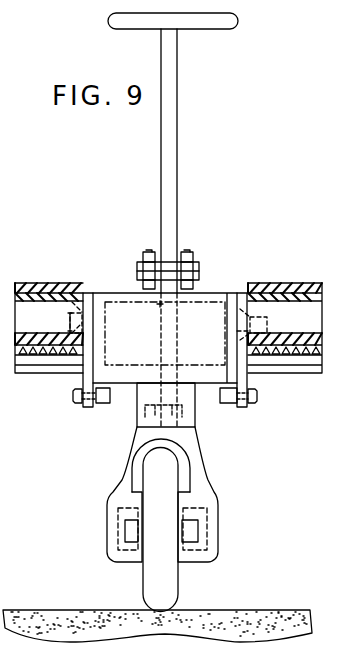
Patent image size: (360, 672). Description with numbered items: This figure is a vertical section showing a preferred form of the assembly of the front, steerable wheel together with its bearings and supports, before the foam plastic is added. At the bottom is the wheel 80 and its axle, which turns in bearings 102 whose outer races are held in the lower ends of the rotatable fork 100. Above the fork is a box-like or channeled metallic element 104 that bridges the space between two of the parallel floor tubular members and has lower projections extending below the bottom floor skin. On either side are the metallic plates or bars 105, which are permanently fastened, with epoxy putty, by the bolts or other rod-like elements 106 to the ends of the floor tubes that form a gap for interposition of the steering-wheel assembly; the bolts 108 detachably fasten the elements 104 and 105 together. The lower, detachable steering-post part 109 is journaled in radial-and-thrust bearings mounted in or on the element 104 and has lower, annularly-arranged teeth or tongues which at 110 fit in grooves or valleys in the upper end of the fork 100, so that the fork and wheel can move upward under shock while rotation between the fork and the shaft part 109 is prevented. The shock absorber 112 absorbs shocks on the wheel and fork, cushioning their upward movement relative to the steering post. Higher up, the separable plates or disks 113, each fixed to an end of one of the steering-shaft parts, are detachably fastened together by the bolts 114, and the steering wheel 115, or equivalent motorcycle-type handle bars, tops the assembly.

The steering wheel 115 is at (222, 27).
The bolts 114 is at (150, 252).
The separable plates or disks 113 is at (138, 271).
The lower, detachable steering-post part 109 is at (158, 337).
The box-like or channeled metallic element 104 is at (226, 320).
The bolts or other rod-like elements 106 is at (66, 321).
The bolts 108 is at (72, 396).
The metallic plates or bars 105 is at (240, 407).
The shock absorber 112 is at (142, 418).
The teeth or tongues fitting in grooves 110 is at (192, 438).
The rotatable fork 100 is at (127, 480).
The bearings 102 is at (186, 557).
The wheel 80 is at (143, 580).